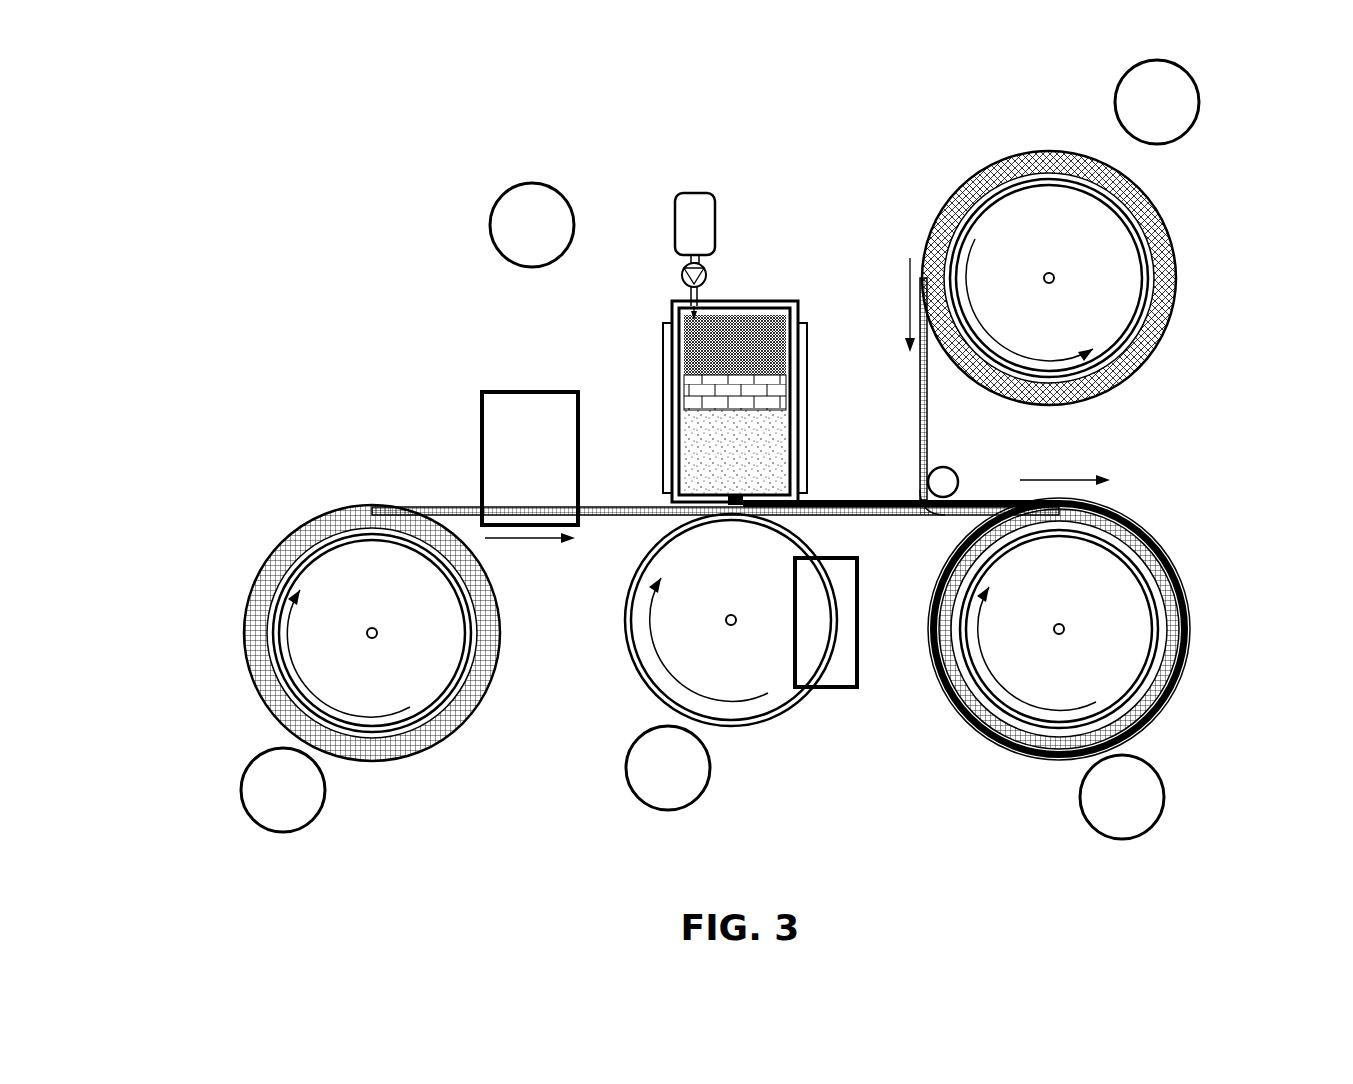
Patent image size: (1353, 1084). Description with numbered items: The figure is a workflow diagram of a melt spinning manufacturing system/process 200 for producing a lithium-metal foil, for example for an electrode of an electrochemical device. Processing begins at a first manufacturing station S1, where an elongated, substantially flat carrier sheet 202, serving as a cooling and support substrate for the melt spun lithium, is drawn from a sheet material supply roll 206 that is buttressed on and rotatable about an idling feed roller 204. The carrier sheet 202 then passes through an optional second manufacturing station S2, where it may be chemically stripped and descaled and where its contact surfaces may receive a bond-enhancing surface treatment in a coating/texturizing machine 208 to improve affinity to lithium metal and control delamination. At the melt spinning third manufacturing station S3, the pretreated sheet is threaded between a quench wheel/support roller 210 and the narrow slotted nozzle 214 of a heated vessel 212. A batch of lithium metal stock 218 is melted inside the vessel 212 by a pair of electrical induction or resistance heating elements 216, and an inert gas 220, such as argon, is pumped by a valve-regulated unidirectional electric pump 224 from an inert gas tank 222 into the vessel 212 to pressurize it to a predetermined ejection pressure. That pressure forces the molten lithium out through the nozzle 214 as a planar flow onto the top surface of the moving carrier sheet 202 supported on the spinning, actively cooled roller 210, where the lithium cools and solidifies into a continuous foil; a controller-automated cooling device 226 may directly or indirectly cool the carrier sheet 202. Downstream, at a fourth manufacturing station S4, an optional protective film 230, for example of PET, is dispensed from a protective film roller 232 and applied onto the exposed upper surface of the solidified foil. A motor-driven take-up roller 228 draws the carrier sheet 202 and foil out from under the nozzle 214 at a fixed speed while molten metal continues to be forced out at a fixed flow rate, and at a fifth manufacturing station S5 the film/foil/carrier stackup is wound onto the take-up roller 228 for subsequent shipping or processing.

The manufacturing system/process 200 is at (270, 126).
The carrier sheet 202 is at (715, 466).
The idling feed roller 204 is at (328, 619).
The sheet material supply roll 206 is at (323, 542).
The coating/texturizing machine 208 is at (498, 392).
The quench wheel/support roller 210 is at (663, 686).
The heated vessel 212 is at (735, 389).
The slotted nozzle 214 is at (728, 500).
The heating elements 216 is at (663, 352).
The lithium metal stock 218 is at (786, 393).
The inert gas 220 is at (688, 316).
The inert gas tank 222 is at (683, 192).
The electric pump 224 is at (682, 273).
The cooling device 226 is at (845, 687).
The take-up roller 228 is at (1145, 537).
The protective film 230 is at (926, 386).
The protective film roller 232 is at (1133, 215).
The first manufacturing station S1 is at (283, 790).
The second manufacturing station S2 is at (532, 225).
The third manufacturing station S3 is at (668, 768).
The fourth manufacturing station S4 is at (1157, 102).
The fifth manufacturing station S5 is at (1122, 797).